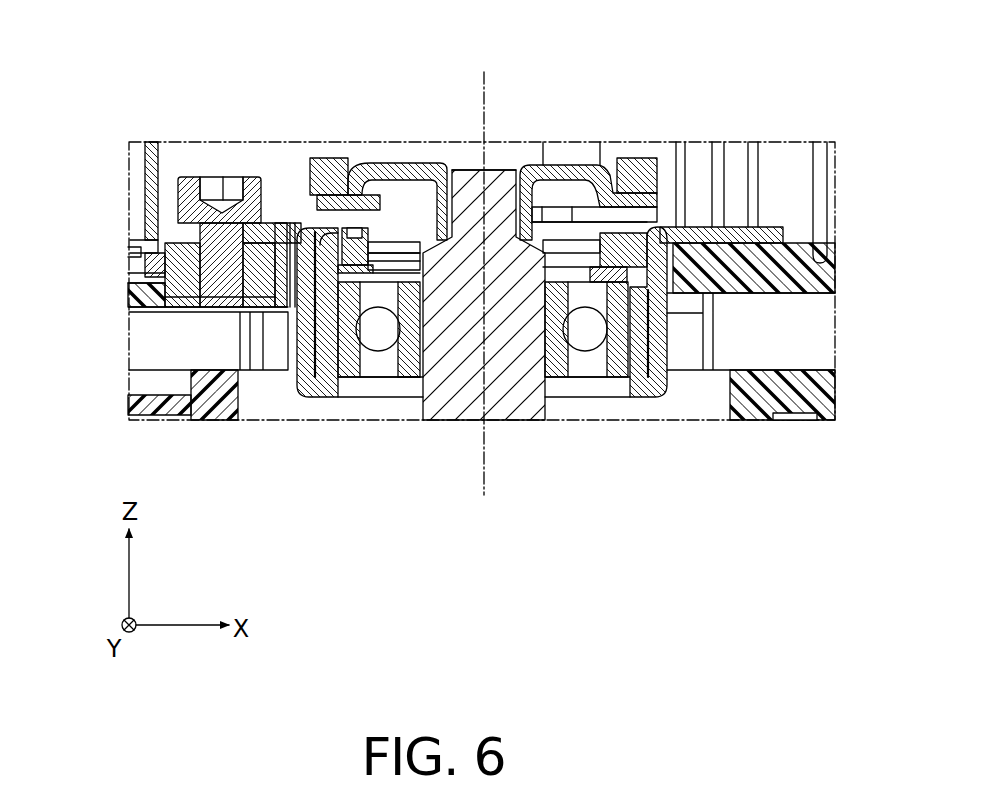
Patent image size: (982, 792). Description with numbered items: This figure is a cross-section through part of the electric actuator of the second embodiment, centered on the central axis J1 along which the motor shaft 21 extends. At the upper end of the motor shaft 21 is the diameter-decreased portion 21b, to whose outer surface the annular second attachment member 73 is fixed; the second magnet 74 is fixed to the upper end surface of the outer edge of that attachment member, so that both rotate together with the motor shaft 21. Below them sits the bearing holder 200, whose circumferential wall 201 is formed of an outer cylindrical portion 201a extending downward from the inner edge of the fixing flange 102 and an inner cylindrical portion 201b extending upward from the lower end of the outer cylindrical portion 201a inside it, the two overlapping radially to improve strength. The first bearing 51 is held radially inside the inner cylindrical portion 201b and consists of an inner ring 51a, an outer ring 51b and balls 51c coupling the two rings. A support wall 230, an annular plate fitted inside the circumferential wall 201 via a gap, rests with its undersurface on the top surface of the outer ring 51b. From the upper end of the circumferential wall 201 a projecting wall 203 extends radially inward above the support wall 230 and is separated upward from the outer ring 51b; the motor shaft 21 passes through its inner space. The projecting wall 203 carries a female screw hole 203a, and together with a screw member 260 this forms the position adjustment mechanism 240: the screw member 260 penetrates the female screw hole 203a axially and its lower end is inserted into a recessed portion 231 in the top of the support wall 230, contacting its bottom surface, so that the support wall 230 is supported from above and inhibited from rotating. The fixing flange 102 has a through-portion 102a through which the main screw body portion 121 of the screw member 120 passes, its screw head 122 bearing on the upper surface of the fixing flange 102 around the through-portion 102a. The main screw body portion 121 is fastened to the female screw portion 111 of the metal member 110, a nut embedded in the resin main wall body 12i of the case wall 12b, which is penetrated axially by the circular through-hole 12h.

The motor shaft 21 is at (505, 415).
The diameter-decreased portion 21b is at (502, 200).
The central axis J1 is at (488, 80).
The female screw hole 203a is at (362, 210).
The second magnet 74 is at (323, 157).
The second attachment member 73 is at (360, 228).
The screw member 260 is at (387, 242).
The position adjustment mechanism 240 is at (378, 258).
The circumferential wall 201 is at (336, 380).
The outer cylindrical portion 201a is at (302, 345).
The inner cylindrical portion 201b is at (338, 352).
The first bearing 51 is at (499, 395).
The inner ring 51a is at (557, 365).
The outer ring 51b is at (618, 365).
The balls 51c is at (586, 340).
The recessed portion 231 is at (365, 282).
The bearing holder 200 is at (668, 400).
The projecting wall 203 is at (618, 238).
The support wall 230 is at (607, 270).
The fixing flange 102 is at (768, 227).
The main wall body 12i is at (756, 293).
The case wall 12b is at (792, 300).
The through-portion 102a is at (249, 243).
The screw head 122 is at (175, 200).
The main screw body portion 121 is at (242, 285).
The screw member 120 is at (257, 166).
The metal member 110 is at (158, 297).
The female screw portion 111 is at (222, 285).
The through-hole 12h is at (300, 262).